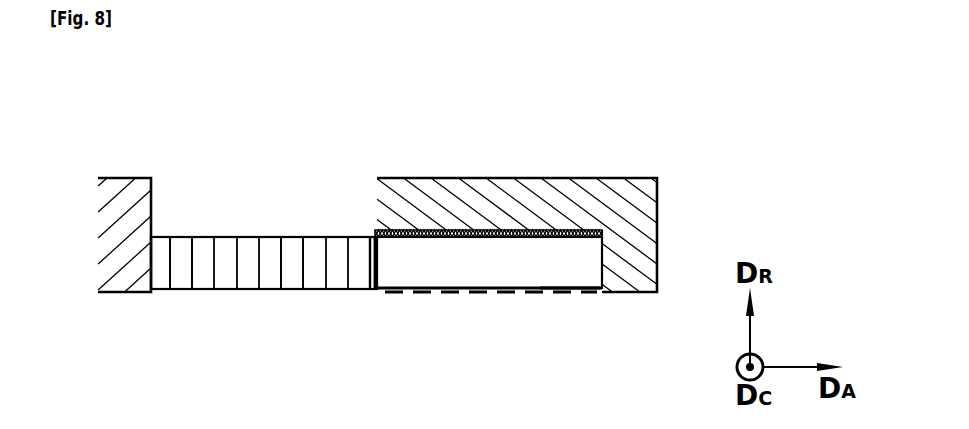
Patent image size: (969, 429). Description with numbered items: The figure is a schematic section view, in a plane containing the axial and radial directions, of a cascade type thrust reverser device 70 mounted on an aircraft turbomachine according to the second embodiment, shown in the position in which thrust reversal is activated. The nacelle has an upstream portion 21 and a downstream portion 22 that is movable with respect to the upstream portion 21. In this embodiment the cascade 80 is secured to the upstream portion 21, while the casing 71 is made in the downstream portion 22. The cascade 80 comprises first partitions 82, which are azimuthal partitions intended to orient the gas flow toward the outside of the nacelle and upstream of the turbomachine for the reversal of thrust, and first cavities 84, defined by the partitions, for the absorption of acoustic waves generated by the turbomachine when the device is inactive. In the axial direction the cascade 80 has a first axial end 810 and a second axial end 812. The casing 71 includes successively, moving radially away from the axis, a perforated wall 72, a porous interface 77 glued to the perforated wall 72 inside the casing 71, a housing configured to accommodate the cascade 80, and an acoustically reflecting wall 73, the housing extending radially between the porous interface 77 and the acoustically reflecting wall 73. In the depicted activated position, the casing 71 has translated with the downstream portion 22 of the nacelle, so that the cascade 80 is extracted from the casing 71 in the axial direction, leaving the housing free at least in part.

The upstream portion 21 is at (118, 220).
The downstream portion 22 is at (640, 190).
The thrust reverser device 70 is at (673, 140).
The casing 71 is at (604, 247).
The perforated wall 72 is at (460, 294).
The acoustically reflecting wall 73 is at (487, 229).
The porous interface 77 is at (565, 280).
The cascade 80 is at (246, 234).
The first axial end 810 is at (160, 230).
The second axial end 812 is at (365, 231).
The first partitions 82 is at (307, 256).
The first cavities 84 is at (202, 279).